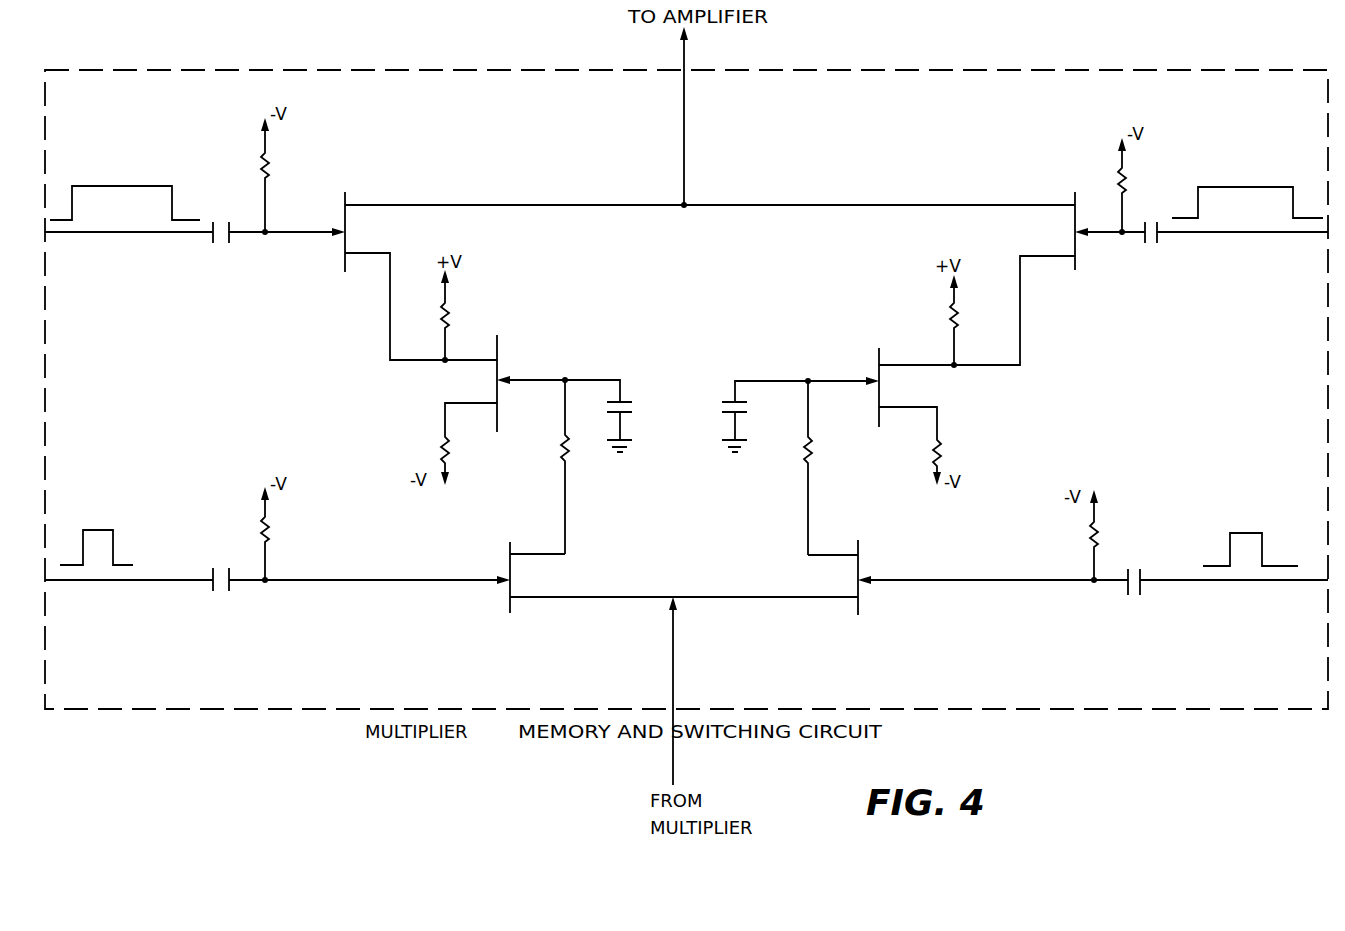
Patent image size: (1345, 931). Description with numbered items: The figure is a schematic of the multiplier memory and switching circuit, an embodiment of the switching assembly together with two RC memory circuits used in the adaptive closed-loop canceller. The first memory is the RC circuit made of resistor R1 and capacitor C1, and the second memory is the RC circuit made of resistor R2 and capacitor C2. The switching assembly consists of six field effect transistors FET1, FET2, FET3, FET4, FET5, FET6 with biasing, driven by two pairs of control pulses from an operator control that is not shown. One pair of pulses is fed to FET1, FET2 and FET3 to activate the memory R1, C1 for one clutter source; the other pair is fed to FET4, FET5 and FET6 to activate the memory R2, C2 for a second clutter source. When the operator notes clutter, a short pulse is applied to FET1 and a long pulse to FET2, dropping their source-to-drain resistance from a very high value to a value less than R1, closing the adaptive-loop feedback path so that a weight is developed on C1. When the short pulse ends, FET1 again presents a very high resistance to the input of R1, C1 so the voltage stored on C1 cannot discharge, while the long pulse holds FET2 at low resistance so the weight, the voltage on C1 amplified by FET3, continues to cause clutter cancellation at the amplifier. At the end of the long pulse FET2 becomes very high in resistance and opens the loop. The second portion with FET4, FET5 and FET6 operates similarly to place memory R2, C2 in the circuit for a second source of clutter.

The field effect transistor FET1 is at (675, 593).
The field effect transistor FET2 is at (383, 264).
The field effect transistor FET3 is at (503, 396).
The field effect transistor FET4 is at (968, 592).
The field effect transistor FET5 is at (1019, 261).
The field effect transistor FET6 is at (881, 405).
The resistor R1 is at (565, 440).
The resistor R2 is at (808, 443).
The capacitor C1 is at (605, 412).
The capacitor C2 is at (752, 415).